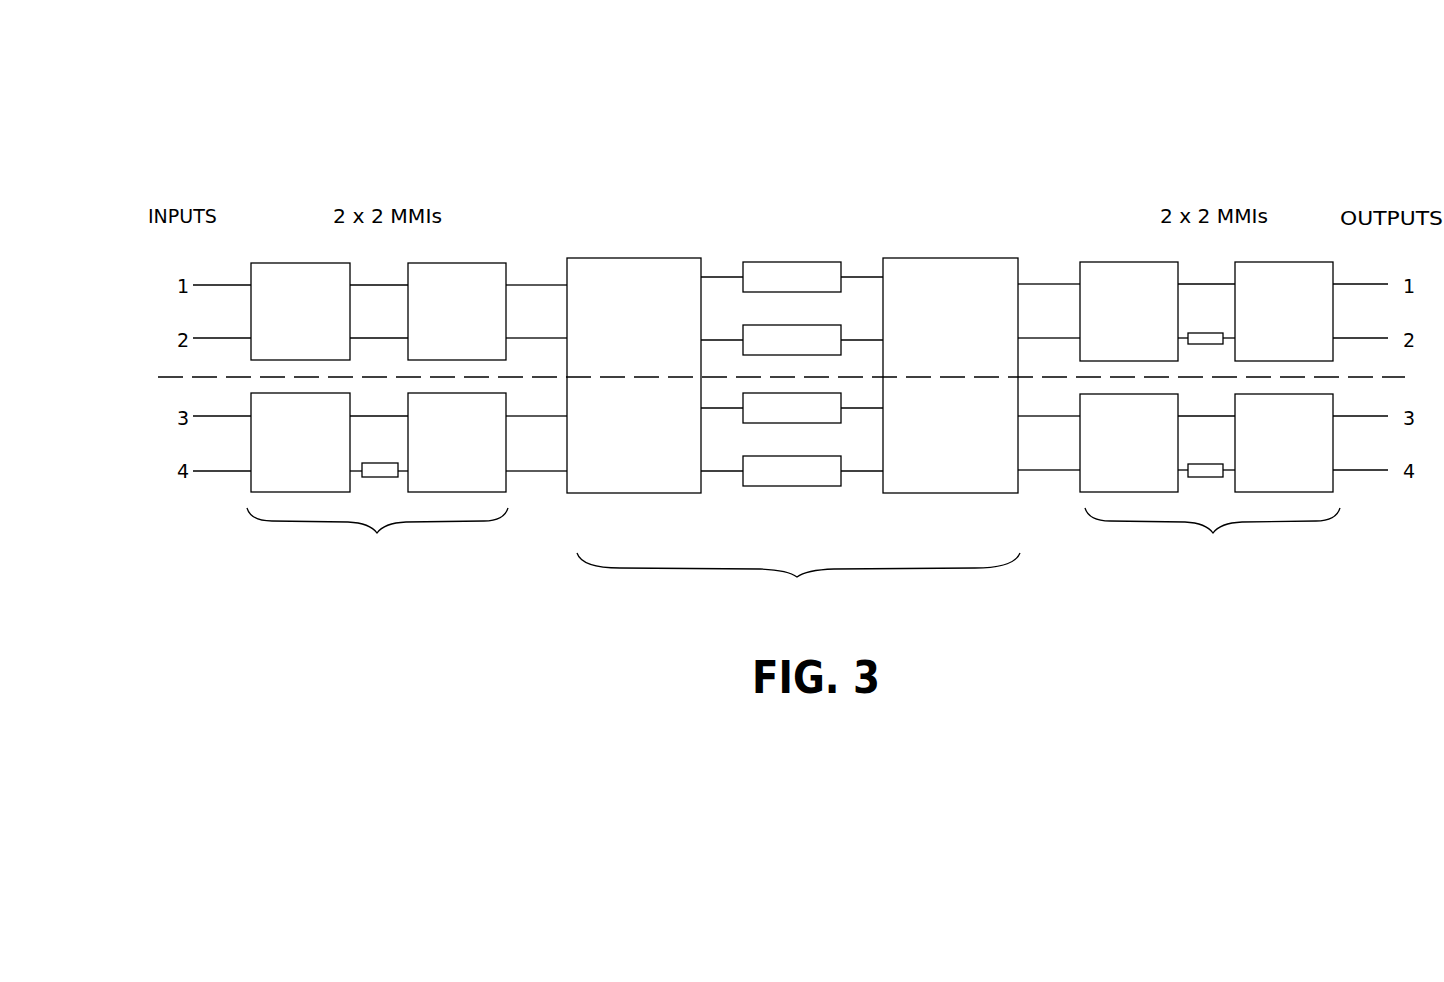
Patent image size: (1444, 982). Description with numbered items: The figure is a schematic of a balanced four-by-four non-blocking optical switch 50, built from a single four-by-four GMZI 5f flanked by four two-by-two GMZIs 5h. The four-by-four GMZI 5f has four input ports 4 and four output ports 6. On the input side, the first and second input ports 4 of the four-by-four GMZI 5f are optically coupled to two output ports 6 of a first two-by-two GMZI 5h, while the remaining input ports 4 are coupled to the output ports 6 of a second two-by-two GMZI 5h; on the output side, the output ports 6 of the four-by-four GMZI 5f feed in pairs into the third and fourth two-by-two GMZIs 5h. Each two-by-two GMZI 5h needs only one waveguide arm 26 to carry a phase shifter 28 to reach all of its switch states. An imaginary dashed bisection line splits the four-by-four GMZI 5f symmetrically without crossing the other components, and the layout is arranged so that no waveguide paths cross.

The balanced 4×4 non-blocking optical switch 50 is at (678, 143).
The input port 4 is at (634, 370).
The output port 6 is at (950, 380).
The waveguide arm 26 is at (792, 340).
The phase shifter 28 is at (790, 373).
The 2×2 GMZI 5h is at (793, 416).
The 4×4 GMZI 5f is at (793, 435).